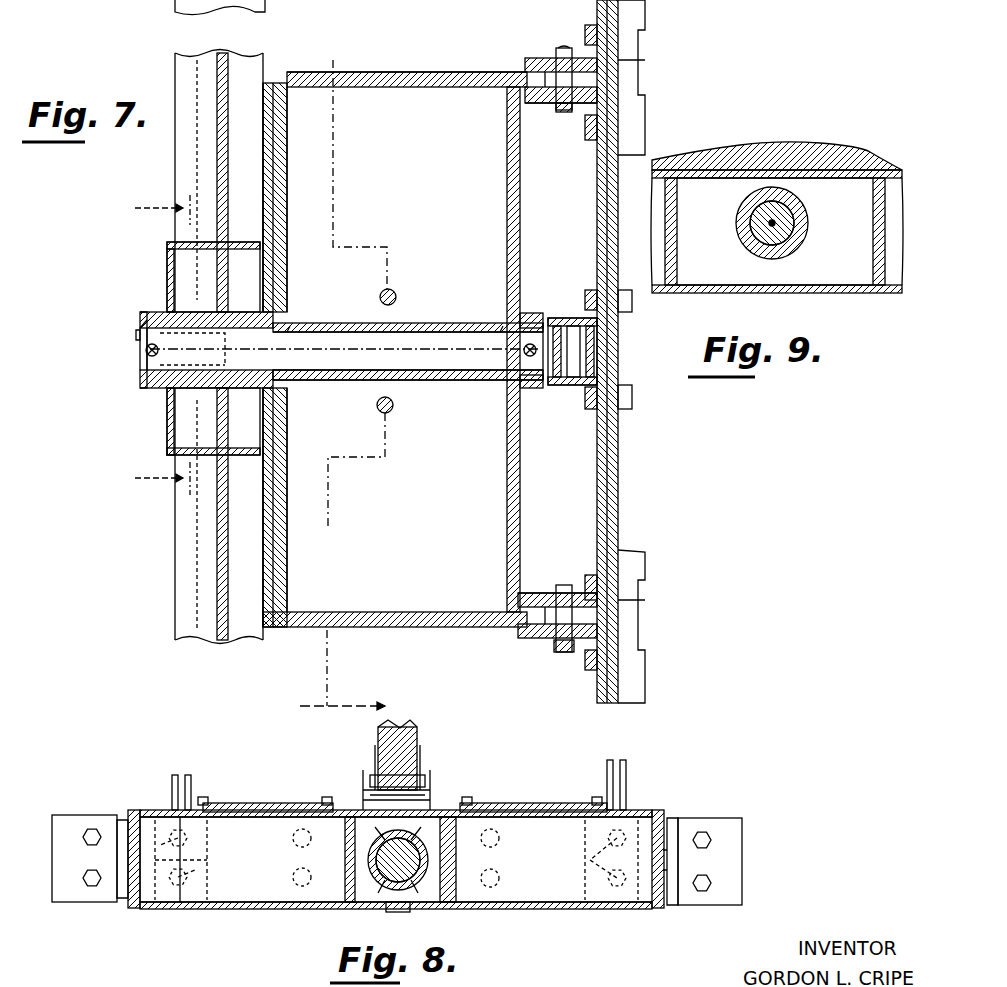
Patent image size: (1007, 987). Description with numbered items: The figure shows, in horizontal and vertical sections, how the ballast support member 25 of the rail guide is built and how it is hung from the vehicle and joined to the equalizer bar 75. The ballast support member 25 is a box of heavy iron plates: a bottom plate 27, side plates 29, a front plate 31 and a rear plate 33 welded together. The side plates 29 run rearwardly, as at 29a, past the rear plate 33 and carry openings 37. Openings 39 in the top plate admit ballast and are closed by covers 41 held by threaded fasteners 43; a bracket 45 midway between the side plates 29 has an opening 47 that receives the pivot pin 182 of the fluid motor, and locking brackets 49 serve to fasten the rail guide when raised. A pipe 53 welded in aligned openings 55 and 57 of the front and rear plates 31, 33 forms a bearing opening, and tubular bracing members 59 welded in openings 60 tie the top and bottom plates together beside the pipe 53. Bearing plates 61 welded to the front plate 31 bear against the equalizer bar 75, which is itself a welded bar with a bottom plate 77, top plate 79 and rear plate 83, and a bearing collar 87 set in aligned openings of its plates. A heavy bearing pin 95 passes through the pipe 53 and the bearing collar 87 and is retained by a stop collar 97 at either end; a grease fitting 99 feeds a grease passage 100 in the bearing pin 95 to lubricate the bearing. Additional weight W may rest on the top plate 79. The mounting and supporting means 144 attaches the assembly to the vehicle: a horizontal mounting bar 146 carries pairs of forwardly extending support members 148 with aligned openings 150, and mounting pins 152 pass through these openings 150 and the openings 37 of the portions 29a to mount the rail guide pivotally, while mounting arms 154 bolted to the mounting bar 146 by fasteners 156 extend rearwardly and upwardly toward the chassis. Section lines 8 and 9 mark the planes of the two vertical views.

In FIG. 7, the section line 8— 8 is at (326, 675).
In FIG. 7, the section line 9— 9 is at (151, 345).
In FIG. 7, the ballast support member 25 is at (465, 72).
In FIG. 8, the ballast support member 25 is at (237, 910).
In FIG. 7, the bottom plate 27 is at (438, 196).
In FIG. 9, the bottom plate 27 is at (683, 293).
In FIG. 8, the bottom plate 27 is at (545, 910).
In FIG. 7, the side plates 29 is at (390, 72).
In FIG. 8, the side plates 29 is at (132, 812).
In FIG. 7, the rearwardly extending portions 29a is at (528, 58).
In FIG. 7, the front plate 31 is at (287, 108).
In FIG. 7, the rear plate 33 is at (507, 145).
In FIG. 7, the openings 37 is at (548, 108).
In FIG. 8, the openings 39 is at (205, 822).
In FIG. 8, the covers 41 is at (270, 803).
In FIG. 8, the threaded fasteners 43 is at (205, 797).
In FIG. 8, the bracket 45 is at (412, 745).
In FIG. 8, the opening 47 is at (425, 780).
In FIG. 8, the locking brackets 49 is at (175, 775).
In FIG. 7, the pipe 53 is at (453, 323).
In FIG. 8, the pipe 53 is at (375, 908).
In FIG. 7, the opening 55 is at (298, 323).
In FIG. 7, the opening 57 is at (497, 323).
In FIG. 7, the tubular bracing members 59 is at (382, 293).
In FIG. 8, the tubular bracing members 59 is at (335, 862).
In FIG. 8, the openings 60 is at (345, 812).
In FIG. 7, the bearing plate 61 is at (270, 160).
In FIG. 7, the equalizer bar 75 is at (175, 165).
In FIG. 9, the equalizer bar 75 is at (848, 293).
In FIG. 7, the bottom plate 77 is at (202, 8).
In FIG. 9, the top plate 79 is at (836, 148).
In FIG. 7, the rear plate 83 is at (263, 195).
In FIG. 9, the rear plate 83 is at (713, 254).
In FIG. 7, the bearing collar 87 is at (205, 312).
In FIG. 9, the bearing collar 87 is at (800, 240).
In FIG. 7, the bearing pin 95 is at (455, 380).
In FIG. 9, the bearing pin 95 is at (790, 215).
In FIG. 8, the bearing pin 95 is at (415, 912).
In FIG. 7, the stop collar 97 is at (147, 388).
In FIG. 7, the grease fitting 99 is at (135, 335).
In FIG. 7, the grease passage 100 is at (145, 310).
In FIG. 9, the grease passage 100 is at (755, 220).
In FIG. 7, the mounting and supporting means 144 is at (572, 318).
In FIG. 8, the mounting and supporting means 144 is at (428, 760).
In FIG. 7, the mounting bar 146 is at (603, 452).
In FIG. 8, the mounting bar 146 is at (745, 828).
In FIG. 7, the support members 148 is at (630, 70).
In FIG. 8, the support members 148 is at (118, 815).
In FIG. 7, the openings 150 is at (565, 48).
In FIG. 7, the mounting pins 152 is at (545, 110).
In FIG. 8, the mounting pins 152 is at (712, 858).
In FIG. 7, the mounting arms 154 is at (640, 95).
In FIG. 8, the fasteners 156 is at (85, 843).
In FIG. 8, the pivot pin 182 is at (378, 760).
In FIG. 9, the weight W is at (790, 150).